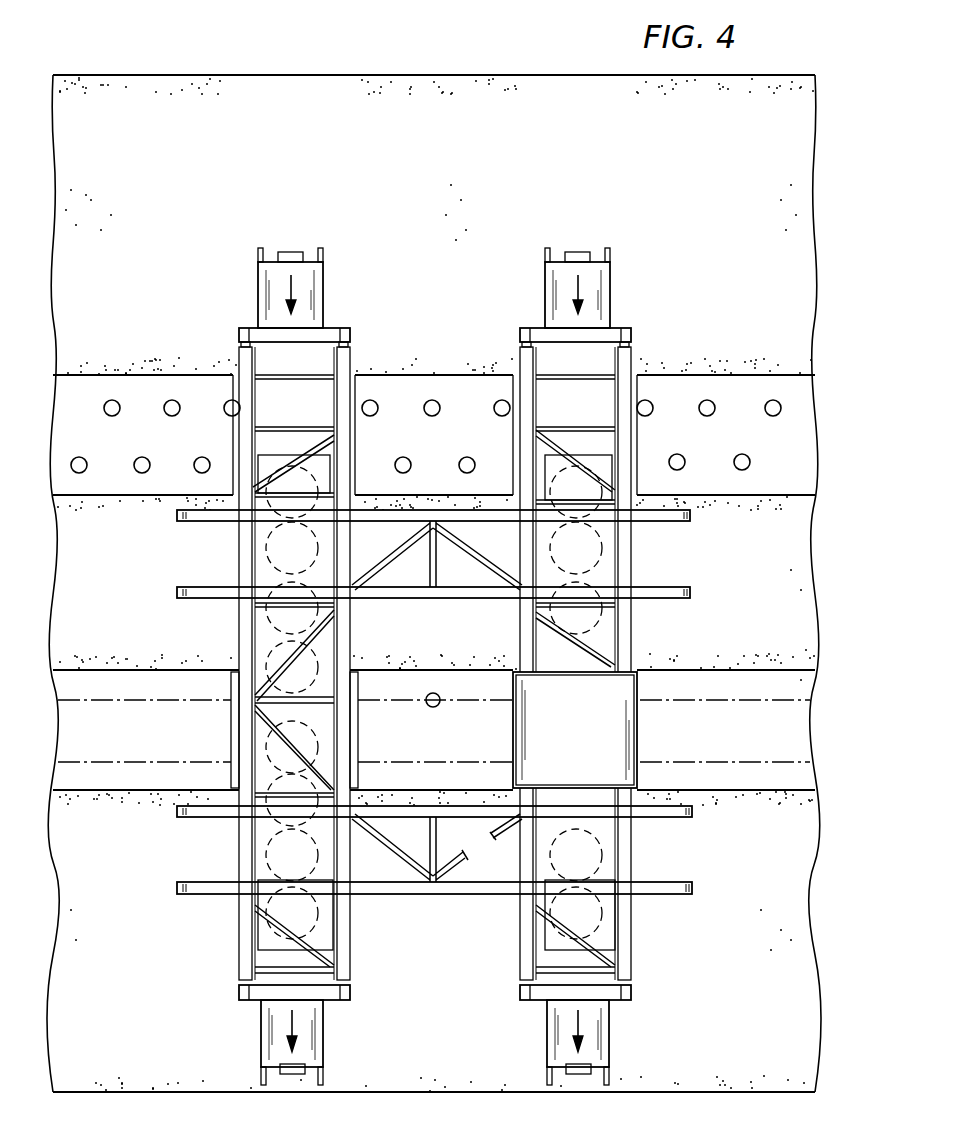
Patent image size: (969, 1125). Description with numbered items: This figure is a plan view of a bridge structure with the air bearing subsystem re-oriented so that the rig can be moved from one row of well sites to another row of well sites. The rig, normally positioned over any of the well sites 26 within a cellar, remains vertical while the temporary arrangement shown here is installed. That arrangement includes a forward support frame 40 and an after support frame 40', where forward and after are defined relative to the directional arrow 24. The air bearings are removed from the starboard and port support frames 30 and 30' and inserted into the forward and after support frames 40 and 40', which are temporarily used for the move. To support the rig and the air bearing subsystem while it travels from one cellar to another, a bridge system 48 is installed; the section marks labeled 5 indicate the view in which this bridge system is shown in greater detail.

The pipe 24 is at (830, 729).
The deck slab 26 is at (114, 417).
The lower cross bracing 30 is at (437, 879).
The upper cross bracing 30' is at (437, 582).
The right support tower 40 is at (609, 666).
The left support tower 40' is at (300, 666).
The clamp block 48 is at (638, 730).
The section line FIG. 5 is at (510, 631).